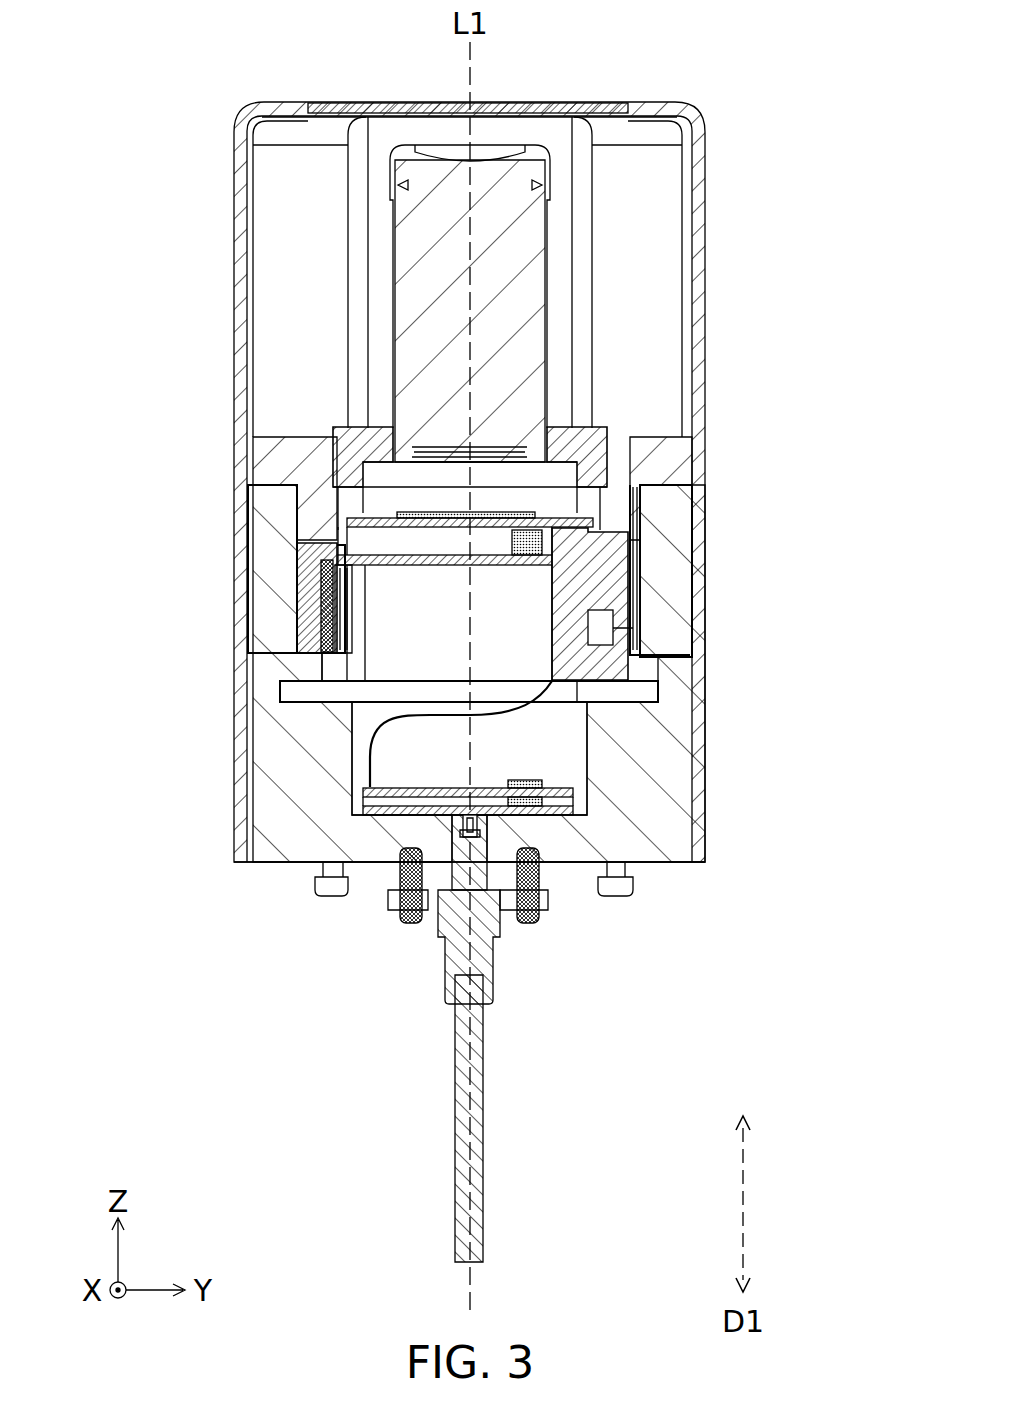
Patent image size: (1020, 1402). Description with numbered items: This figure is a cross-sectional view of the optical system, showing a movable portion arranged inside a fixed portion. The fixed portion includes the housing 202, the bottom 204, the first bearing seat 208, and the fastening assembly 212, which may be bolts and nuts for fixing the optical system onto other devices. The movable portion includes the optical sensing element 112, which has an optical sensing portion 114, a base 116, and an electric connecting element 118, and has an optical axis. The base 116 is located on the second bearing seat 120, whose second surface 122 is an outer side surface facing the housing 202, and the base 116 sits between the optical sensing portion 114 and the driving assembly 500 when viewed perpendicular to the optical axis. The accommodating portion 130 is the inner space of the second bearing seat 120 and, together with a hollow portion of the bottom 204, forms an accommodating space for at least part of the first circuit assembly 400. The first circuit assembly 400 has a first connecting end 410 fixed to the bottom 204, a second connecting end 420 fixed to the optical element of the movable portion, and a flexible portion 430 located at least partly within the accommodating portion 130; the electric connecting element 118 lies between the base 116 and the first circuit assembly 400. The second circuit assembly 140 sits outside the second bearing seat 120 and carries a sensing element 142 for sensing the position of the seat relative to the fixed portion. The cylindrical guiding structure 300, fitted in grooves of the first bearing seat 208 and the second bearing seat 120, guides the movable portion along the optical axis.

The housing 202 is at (698, 192).
The bottom 204 is at (695, 797).
The first bearing seat 208 is at (262, 452).
The optical sensing element 112 is at (552, 510).
The optical sensing portion 114 is at (603, 457).
The base 116 is at (500, 513).
The electric connecting element 118 is at (600, 522).
The second connecting end 420 is at (600, 546).
The guiding structure 300 is at (625, 588).
The second surface 122 is at (600, 627).
The second bearing seat 120 is at (648, 658).
The flexible portion 430 is at (660, 692).
The second circuit assembly 140 is at (320, 560).
The sensing element 142 is at (327, 600).
The driving assembly 500 is at (322, 575).
The accommodating portion 130 is at (403, 643).
The first circuit assembly 400 is at (373, 733).
The first connecting end 410 is at (363, 780).
The fastening assembly 212 is at (488, 1005).